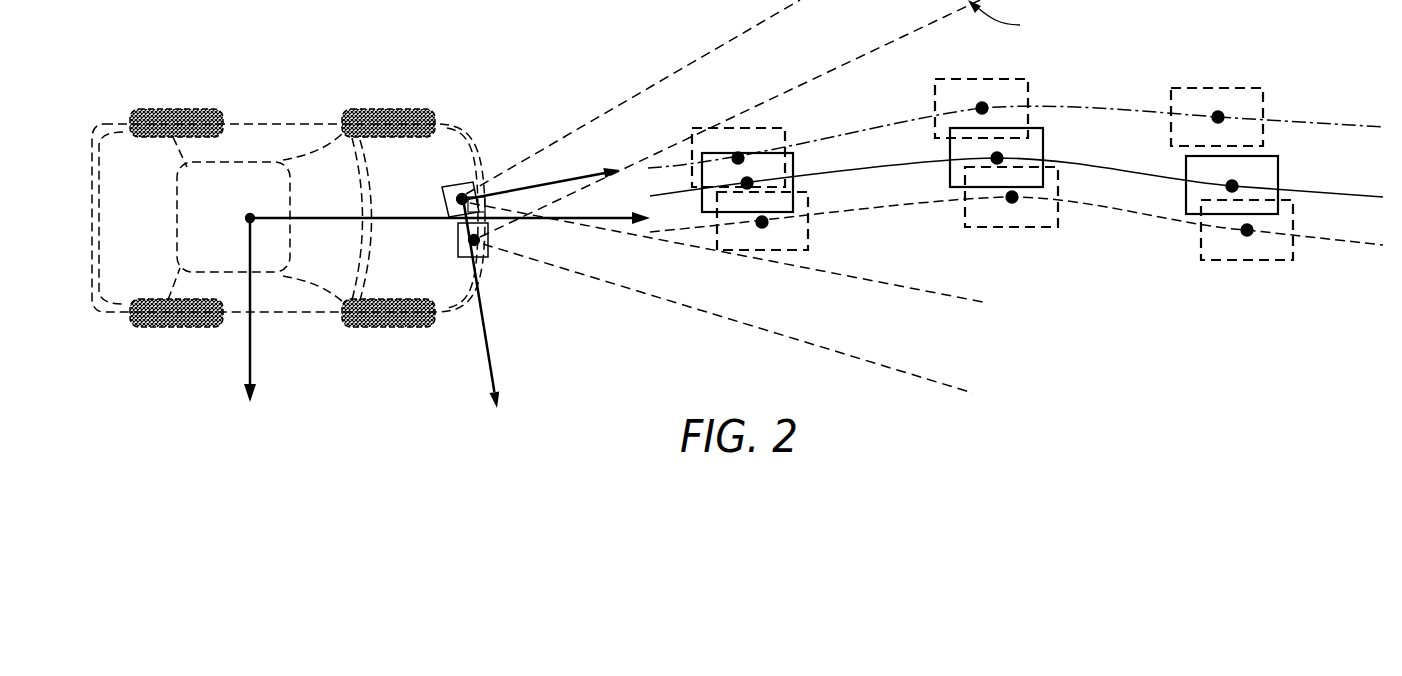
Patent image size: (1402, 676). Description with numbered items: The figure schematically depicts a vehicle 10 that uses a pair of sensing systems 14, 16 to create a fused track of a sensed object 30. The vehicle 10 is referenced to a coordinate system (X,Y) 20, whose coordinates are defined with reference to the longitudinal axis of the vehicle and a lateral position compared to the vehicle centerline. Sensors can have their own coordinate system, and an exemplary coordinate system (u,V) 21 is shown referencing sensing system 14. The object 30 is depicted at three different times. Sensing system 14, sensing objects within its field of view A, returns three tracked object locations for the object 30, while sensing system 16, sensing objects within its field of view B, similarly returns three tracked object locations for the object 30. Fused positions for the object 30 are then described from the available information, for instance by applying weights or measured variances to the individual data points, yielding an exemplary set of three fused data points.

The vehicle 10 is at (268, 150).
The sensing system 14 is at (466, 196).
The sensing system 16 is at (492, 253).
The coordinate system (X,Y) 20 is at (250, 360).
The coordinate system (u,V) 21 is at (483, 341).
The object 30 is at (793, 153).